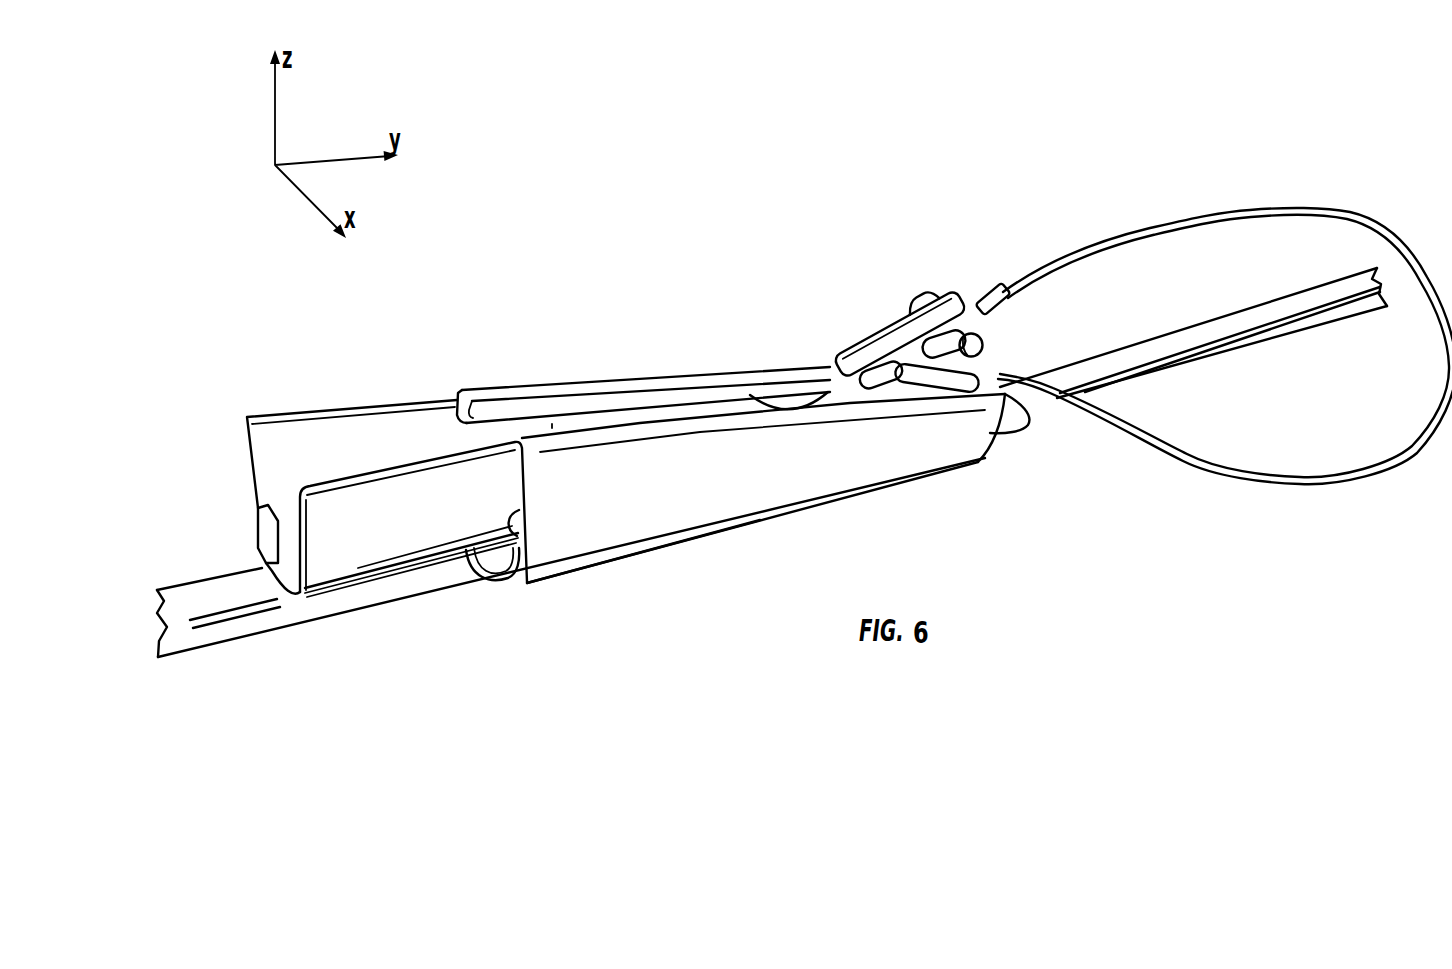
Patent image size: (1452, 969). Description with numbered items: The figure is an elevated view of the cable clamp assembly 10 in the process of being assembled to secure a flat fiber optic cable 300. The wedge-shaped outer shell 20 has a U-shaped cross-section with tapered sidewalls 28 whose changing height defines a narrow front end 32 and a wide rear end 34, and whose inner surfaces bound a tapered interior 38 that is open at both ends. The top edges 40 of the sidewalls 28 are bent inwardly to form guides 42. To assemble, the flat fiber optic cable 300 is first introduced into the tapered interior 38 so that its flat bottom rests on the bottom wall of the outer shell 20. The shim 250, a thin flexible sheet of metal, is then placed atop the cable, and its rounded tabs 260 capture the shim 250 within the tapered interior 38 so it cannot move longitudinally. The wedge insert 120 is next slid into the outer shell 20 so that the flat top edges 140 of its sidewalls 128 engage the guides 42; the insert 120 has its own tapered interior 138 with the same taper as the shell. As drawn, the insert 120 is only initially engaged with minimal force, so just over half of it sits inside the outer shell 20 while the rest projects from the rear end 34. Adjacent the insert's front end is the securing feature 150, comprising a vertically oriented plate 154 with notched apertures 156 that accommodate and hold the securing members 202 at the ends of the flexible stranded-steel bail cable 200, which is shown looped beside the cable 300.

The cable clamp assembly 10 is at (1072, 116).
The wedge-shaped outer shell 20 is at (750, 472).
The sidewalls 28 is at (768, 487).
The narrow front end 32 is at (990, 433).
The wide rear end 34 is at (553, 543).
The tapered interior 38 is at (552, 429).
The top edges 40 is at (592, 388).
The guides 42 is at (487, 410).
The wedge insert 120 is at (387, 492).
The sidewalls 128 is at (384, 547).
The tapered interior 138 is at (390, 448).
The flat top edges 140 is at (437, 400).
The securing feature 150 is at (925, 320).
The plate 154 is at (900, 348).
The notched apertures 156 is at (923, 345).
The bail cable 200 is at (1100, 246).
The securing members 202 is at (962, 377).
The shim 250 is at (468, 578).
The rounded tabs 260 is at (496, 560).
The flat fiber optic cable 300 is at (247, 625).